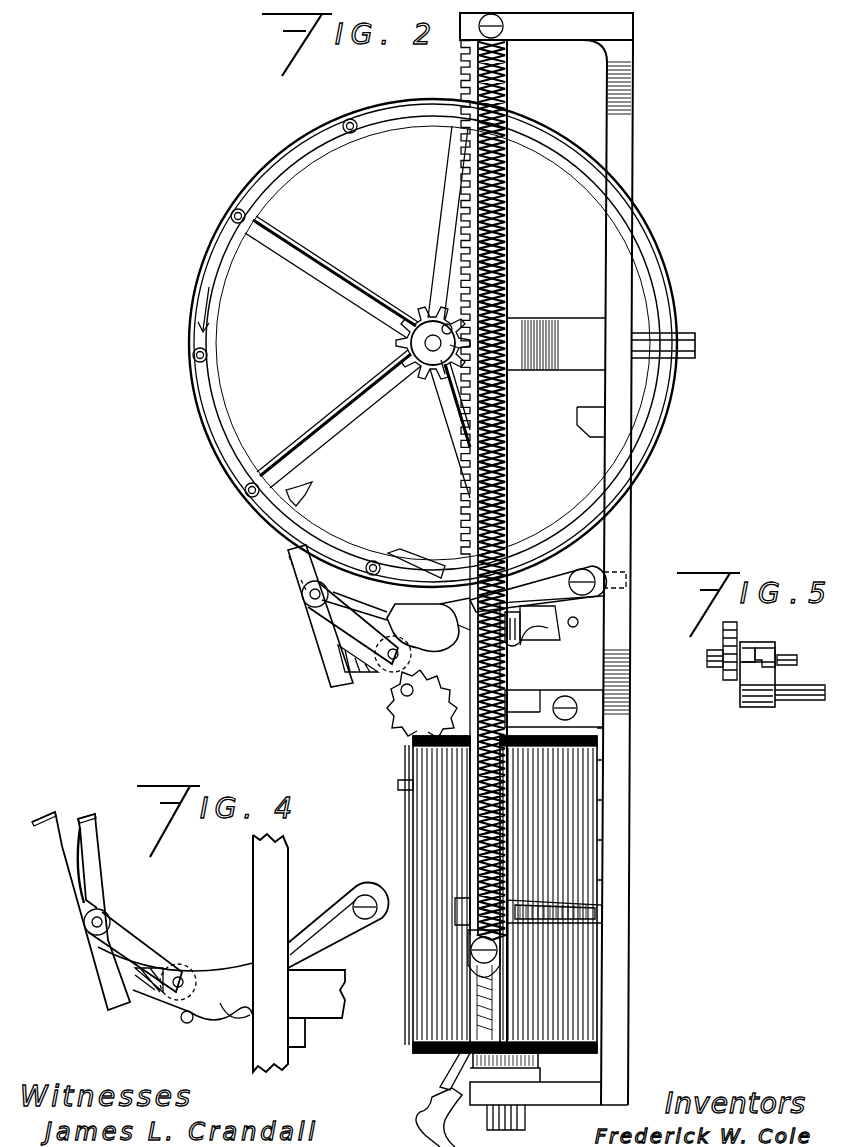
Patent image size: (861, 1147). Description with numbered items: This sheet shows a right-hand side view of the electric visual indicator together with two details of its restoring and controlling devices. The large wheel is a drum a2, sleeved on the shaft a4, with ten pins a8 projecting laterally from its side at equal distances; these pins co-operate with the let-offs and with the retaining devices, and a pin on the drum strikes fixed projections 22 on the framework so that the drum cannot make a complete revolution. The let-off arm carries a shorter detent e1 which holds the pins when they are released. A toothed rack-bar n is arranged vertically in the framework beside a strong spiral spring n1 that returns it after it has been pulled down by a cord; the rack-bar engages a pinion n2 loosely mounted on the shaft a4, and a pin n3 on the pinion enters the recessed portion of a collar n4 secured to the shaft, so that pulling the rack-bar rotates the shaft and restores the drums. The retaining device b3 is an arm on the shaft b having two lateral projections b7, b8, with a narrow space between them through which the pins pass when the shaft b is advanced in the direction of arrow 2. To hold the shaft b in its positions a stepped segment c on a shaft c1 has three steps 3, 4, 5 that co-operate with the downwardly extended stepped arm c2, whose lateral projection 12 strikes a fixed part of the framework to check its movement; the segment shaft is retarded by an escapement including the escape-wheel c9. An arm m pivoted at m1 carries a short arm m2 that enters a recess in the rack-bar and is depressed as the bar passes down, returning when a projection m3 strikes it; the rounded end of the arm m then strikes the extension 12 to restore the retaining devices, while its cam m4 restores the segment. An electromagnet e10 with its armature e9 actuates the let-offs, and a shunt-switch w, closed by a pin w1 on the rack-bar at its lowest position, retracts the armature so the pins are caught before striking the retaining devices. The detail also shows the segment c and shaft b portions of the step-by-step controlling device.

In FIG. 2, the drum a2 is at (197, 428).
In FIG. 2, the pins a8 is at (209, 355).
In FIG. 2, the shaft a4 is at (430, 372).
In FIG. 2, the pinion n2 is at (444, 370).
In FIG. 2, the pin n3 is at (444, 324).
In FIG. 2, the collar n4 is at (409, 346).
In FIG. 2, the toothed rack-bar n is at (505, 218).
In FIG. 2, the spiral spring n1 is at (507, 445).
In FIG. 2, the fixed projections 22 is at (586, 420).
In FIG. 2, the detent e1 is at (396, 562).
In FIG. 2, the arrow 2 is at (302, 498).
In FIG. 2, the retaining device b3 is at (300, 562).
In FIG. 4, the retaining device b3 is at (86, 878).
In FIG. 2, the projection or arm c2 is at (320, 625).
In FIG. 4, the projection or arm c2 is at (98, 945).
In FIG. 2, the projection 12 is at (338, 650).
In FIG. 4, the projection 12 is at (122, 982).
In FIG. 2, the step 4 is at (348, 668).
In FIG. 5, the step 4 is at (762, 672).
In FIG. 2, the step 3 is at (362, 662).
In FIG. 5, the step 3 is at (782, 656).
In FIG. 2, the shaft c1 is at (391, 661).
In FIG. 2, the stepped segment c is at (410, 688).
In FIG. 4, the stepped segment c is at (172, 1000).
In FIG. 5, the stepped segment c is at (748, 676).
In FIG. 2, the pawl pin q is at (403, 698).
In FIG. 4, the pawl pin q is at (187, 1024).
In FIG. 2, the arm m is at (396, 622).
In FIG. 4, the arm m is at (244, 970).
In FIG. 2, the pivot m1 is at (598, 576).
In FIG. 4, the pivot m1 is at (368, 897).
In FIG. 2, the short arm m2 is at (562, 590).
In FIG. 4, the short arm m2 is at (330, 930).
In FIG. 2, the projection m3 is at (537, 632).
In FIG. 4, the projection m3 is at (294, 1030).
In FIG. 4, the projecting cam m4 is at (224, 1012).
In FIG. 2, the pin w1 is at (514, 646).
In FIG. 2, the armature e9 is at (524, 716).
In FIG. 2, the electromagnet e10 is at (415, 838).
In FIG. 2, the escape-wheel c9 is at (410, 800).
In FIG. 2, the shunt-switch w is at (604, 910).
In FIG. 4, the projection b8 is at (40, 814).
In FIG. 4, the projection b7 is at (88, 814).
In FIG. 5, the step 5 is at (748, 655).
In FIG. 5, the shaft b is at (800, 696).